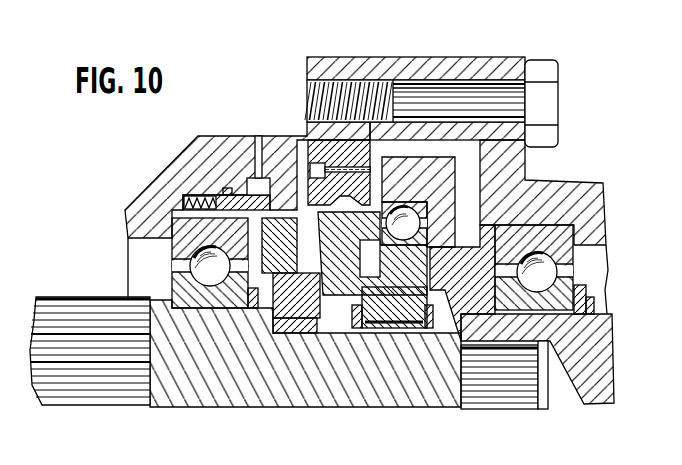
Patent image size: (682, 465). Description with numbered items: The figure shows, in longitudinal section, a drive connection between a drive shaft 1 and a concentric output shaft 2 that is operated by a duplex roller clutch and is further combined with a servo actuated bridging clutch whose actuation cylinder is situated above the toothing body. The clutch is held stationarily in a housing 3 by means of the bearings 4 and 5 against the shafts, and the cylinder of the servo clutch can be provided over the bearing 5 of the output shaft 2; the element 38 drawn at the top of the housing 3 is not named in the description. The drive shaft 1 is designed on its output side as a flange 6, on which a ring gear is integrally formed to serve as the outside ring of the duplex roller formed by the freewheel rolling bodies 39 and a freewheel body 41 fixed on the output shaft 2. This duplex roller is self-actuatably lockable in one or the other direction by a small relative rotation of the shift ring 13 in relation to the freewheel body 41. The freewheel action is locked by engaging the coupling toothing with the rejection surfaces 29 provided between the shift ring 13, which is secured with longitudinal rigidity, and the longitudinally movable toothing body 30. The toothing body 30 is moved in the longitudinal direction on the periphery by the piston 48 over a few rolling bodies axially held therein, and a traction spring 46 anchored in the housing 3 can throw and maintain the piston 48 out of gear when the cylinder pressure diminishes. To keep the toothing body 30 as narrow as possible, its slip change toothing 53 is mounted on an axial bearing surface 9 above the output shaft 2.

The drive shaft 1 is at (590, 357).
The output shaft 2 is at (86, 338).
The housing 3 is at (581, 212).
The bearing 4 is at (561, 249).
The bearing 5 is at (195, 262).
The flange 6 is at (441, 178).
The axial bearing surface 9 is at (258, 312).
The shift ring 13 is at (358, 300).
The rejection surfaces 29 is at (305, 330).
The toothing body 30 is at (290, 330).
The screw 38 is at (350, 150).
The freewheel rolling bodies 39 is at (408, 228).
The freewheel body 41 is at (395, 305).
The traction spring 46 is at (207, 195).
The piston 48 is at (254, 178).
The slip change toothing 53 is at (262, 285).